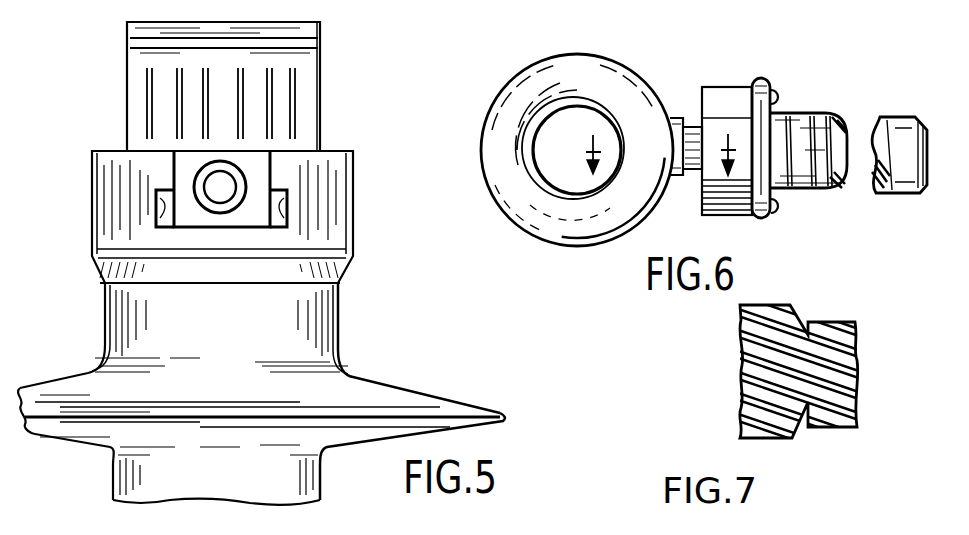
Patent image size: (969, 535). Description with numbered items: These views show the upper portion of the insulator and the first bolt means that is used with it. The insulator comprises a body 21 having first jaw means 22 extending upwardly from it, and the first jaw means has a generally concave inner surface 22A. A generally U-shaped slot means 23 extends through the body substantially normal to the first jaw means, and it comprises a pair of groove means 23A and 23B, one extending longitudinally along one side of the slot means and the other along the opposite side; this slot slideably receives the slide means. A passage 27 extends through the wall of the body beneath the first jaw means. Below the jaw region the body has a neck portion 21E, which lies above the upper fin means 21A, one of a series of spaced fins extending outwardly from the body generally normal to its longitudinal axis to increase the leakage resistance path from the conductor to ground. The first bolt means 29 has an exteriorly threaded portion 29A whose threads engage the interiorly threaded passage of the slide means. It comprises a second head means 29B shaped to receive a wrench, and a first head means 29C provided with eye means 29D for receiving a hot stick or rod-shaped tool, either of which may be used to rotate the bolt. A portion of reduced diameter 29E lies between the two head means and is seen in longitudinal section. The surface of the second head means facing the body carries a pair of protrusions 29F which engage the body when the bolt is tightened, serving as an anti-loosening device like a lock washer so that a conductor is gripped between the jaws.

In FIG. 5, the body 21 is at (345, 230).
In FIG. 5, the upper fin means 21A is at (497, 413).
In FIG. 5, the neck portion 21E is at (330, 325).
In FIG. 5, the first jaw means 22 is at (322, 36).
In FIG. 5, the concave inner surface 22A is at (302, 85).
In FIG. 5, the slot means 23 is at (266, 172).
In FIG. 5, the groove means 23A is at (282, 210).
In FIG. 5, the groove means 23B is at (162, 213).
In FIG. 5, the passage 27 is at (222, 185).
In FIG. 6, the first bolt means 29 is at (829, 104).
In FIG. 6, the exteriorly threaded portion 29A is at (890, 195).
In FIG. 6, the second head means 29B is at (720, 92).
In FIG. 6, the first head means 29C is at (617, 82).
In FIG. 6, the eye means 29D is at (548, 176).
In FIG. 6, the portion of reduced diameter 29E is at (685, 178).
In FIG. 7, the portion of reduced diameter 29E is at (799, 316).
In FIG. 6, the protrusions 29F is at (776, 97).